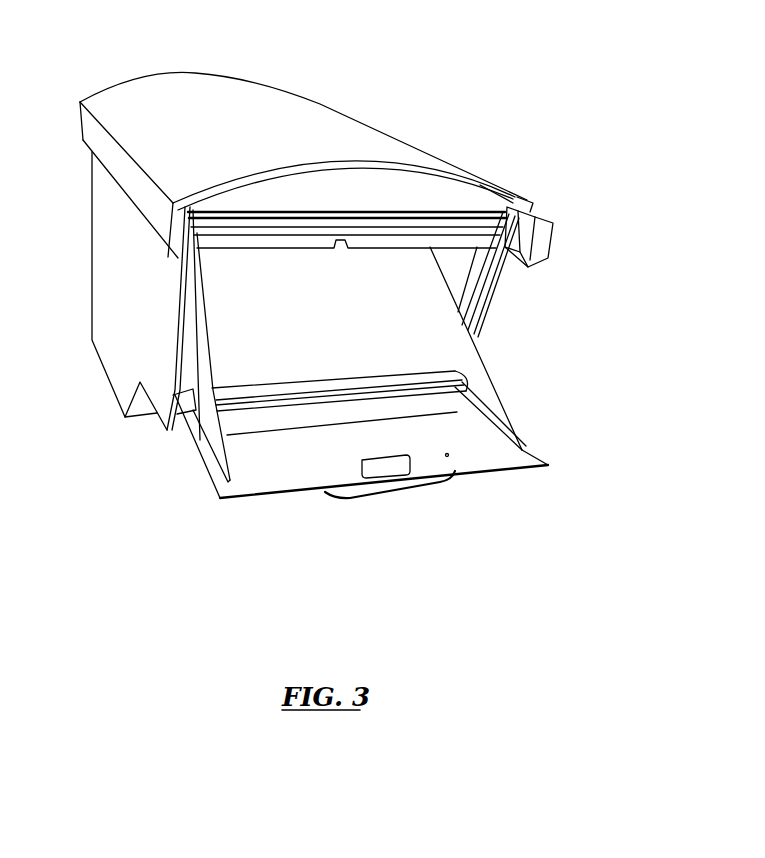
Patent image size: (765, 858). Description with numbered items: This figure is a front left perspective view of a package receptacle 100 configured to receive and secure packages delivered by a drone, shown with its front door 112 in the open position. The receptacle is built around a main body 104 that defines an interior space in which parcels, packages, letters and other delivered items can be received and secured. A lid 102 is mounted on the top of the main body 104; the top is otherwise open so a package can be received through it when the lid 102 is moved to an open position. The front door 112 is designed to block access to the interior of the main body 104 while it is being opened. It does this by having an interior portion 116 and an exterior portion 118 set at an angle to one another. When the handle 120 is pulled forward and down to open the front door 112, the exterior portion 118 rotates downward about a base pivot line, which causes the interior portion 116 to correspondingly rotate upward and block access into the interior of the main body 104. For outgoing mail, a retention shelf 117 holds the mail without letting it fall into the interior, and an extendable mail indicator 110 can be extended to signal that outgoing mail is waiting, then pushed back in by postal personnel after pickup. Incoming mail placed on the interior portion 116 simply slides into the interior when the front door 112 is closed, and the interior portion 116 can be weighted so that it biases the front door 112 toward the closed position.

The package receptacle 100 is at (356, 43).
The lid 102 is at (110, 98).
The main body 104 is at (112, 265).
The extendable mail indicator 110 is at (553, 235).
The front door 112 is at (530, 455).
The interior portion 116 is at (420, 315).
The retention shelf 117 is at (445, 375).
The exterior portion 118 is at (263, 470).
The handle 120 is at (370, 495).